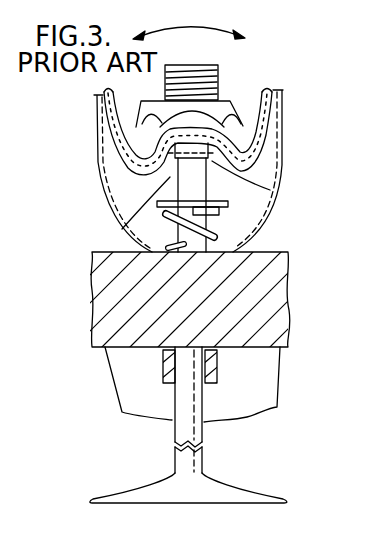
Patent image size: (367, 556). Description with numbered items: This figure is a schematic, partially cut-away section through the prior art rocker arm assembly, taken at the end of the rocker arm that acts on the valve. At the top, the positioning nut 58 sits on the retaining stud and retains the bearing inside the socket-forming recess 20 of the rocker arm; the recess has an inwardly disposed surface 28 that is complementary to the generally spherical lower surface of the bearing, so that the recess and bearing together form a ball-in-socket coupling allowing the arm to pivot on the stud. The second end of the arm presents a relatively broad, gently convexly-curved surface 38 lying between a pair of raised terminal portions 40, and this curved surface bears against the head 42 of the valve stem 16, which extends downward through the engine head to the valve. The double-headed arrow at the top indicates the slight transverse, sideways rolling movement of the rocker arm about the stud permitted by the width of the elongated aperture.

The valve stem 16 is at (187, 383).
The socket-forming recess 20 is at (274, 212).
The inwardly disposed surface 28 is at (12, 158).
The convexly-curved surface 38 is at (266, 190).
The raised terminal portions 40 is at (254, 158).
The head of valve stem 42 is at (115, 222).
The positioning nut 58 is at (225, 106).